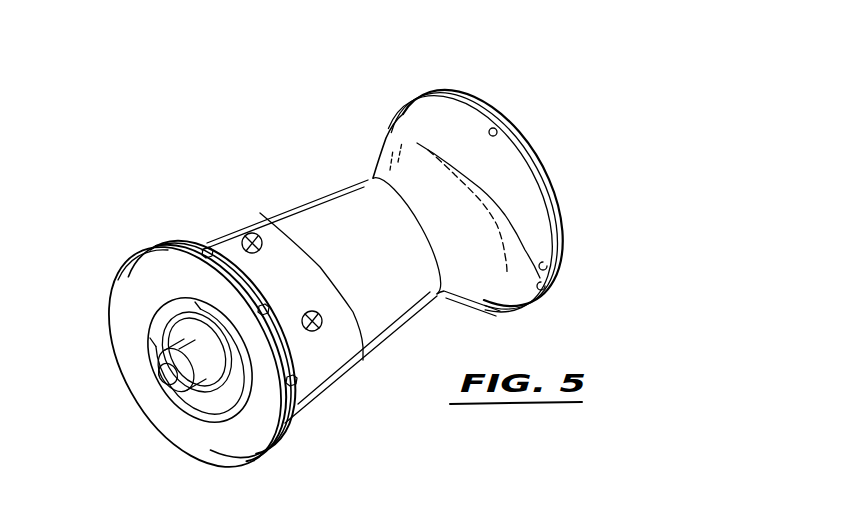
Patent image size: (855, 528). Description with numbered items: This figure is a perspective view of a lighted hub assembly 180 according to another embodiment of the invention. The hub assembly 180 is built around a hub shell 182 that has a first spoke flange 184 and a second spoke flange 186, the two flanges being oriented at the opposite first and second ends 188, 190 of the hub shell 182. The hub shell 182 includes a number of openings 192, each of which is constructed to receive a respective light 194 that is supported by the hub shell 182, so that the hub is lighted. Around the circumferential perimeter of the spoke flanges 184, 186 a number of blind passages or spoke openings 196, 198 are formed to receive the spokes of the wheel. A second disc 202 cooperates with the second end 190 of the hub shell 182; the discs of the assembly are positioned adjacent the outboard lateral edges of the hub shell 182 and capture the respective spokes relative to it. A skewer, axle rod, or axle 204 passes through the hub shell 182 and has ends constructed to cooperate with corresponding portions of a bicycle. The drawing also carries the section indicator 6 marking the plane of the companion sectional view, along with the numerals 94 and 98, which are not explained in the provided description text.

The hub assembly 180 is at (352, 108).
The hub shell 182 is at (327, 190).
The first spoke flange 184 is at (180, 245).
The second spoke flange 186 is at (410, 103).
The first end 188 is at (179, 463).
The second end 190 is at (598, 276).
The openings 192 is at (320, 323).
The light 194 is at (252, 233).
The spoke openings 196 is at (124, 275).
The spoke openings 198 is at (494, 127).
The second disc 202 is at (557, 177).
The axle 204 is at (160, 366).
The section line 6- 6 is at (567, 131).
The direction arrow 94 is at (430, 512).
The reference 98 is at (500, 516).